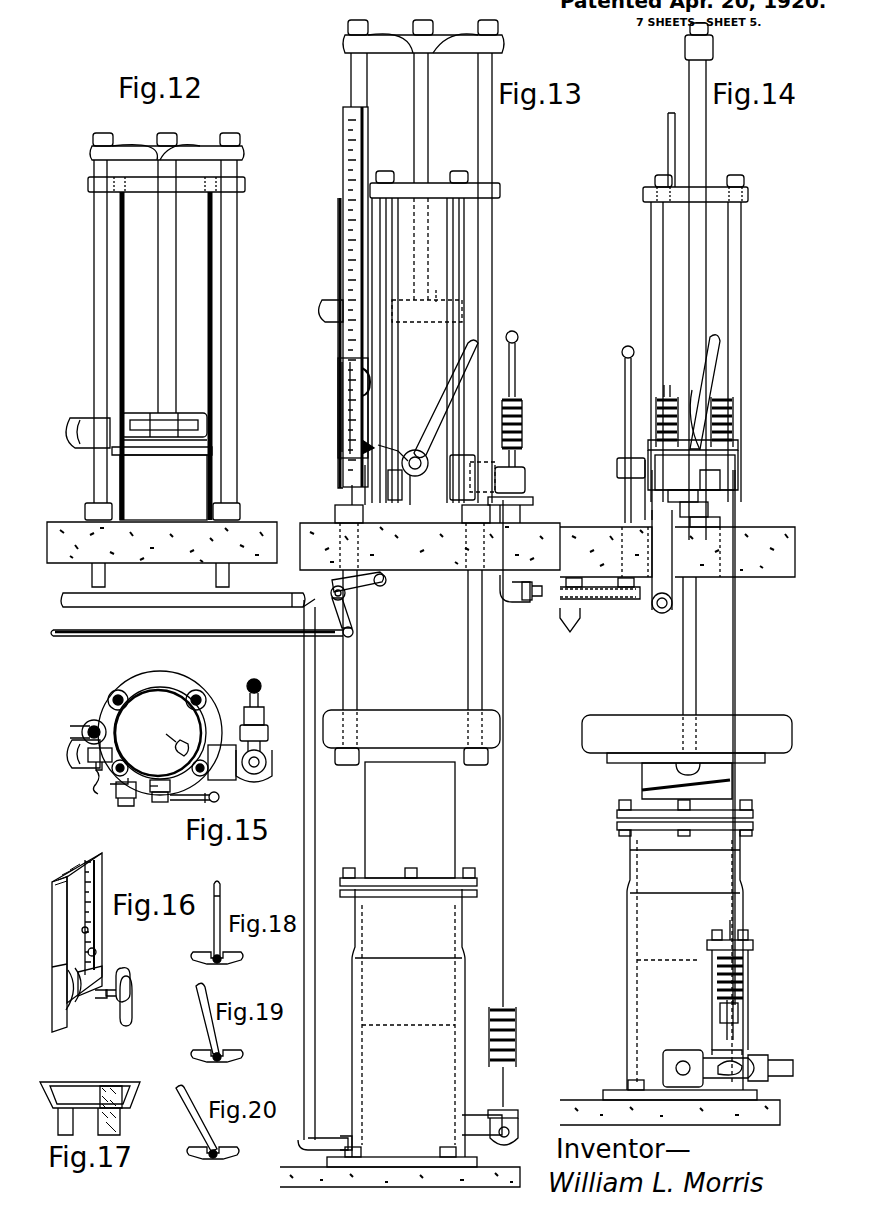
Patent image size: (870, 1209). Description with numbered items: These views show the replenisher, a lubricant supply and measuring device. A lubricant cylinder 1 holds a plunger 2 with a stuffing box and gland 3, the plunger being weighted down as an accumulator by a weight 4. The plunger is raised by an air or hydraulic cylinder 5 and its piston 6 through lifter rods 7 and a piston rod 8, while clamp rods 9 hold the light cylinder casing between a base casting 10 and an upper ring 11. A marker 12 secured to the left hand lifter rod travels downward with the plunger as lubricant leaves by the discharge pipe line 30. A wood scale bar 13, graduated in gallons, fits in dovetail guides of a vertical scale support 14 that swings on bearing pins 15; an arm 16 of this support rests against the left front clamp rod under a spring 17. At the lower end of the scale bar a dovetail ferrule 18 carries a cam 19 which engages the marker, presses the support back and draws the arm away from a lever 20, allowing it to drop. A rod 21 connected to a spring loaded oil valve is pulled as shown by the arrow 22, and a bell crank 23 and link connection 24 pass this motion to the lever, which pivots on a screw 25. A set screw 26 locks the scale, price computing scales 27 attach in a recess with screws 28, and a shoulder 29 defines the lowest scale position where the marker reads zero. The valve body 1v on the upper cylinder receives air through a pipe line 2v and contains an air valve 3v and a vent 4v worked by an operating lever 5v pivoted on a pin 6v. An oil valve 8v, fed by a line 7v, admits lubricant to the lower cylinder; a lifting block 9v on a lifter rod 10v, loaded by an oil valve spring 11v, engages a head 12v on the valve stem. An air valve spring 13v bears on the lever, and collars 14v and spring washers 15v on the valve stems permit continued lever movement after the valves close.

In FIG. 14, the lubricant cylinder 1 is at (628, 932).
In FIG. 14, the valve body 1v is at (716, 496).
In FIG. 15, the valve body 1v is at (224, 778).
In FIG. 13, the plunger 2 is at (410, 820).
In FIG. 14, the plunger 2 is at (642, 776).
In FIG. 13, the pipe line 2v is at (530, 612).
In FIG. 14, the pipe line 2v is at (660, 614).
In FIG. 13, the stuffing box and gland 3 is at (477, 886).
In FIG. 14, the stuffing box and gland 3 is at (617, 818).
In FIG. 14, the air valve 3v is at (674, 550).
In FIG. 13, the weight 4 is at (434, 732).
In FIG. 14, the weight 4 is at (650, 736).
In FIG. 14, the vent 4v is at (734, 476).
In FIG. 12, the air or hydraulic cylinder 5 is at (124, 360).
In FIG. 13, the air or hydraulic cylinder 5 is at (445, 236).
In FIG. 14, the air or hydraulic cylinder 5 is at (718, 252).
In FIG. 14, the operating lever 5v is at (714, 338).
In FIG. 12, the piston 6 is at (180, 413).
In FIG. 13, the piston 6 is at (434, 296).
In FIG. 14, the pin 6v is at (702, 414).
In FIG. 13, the lifter rods 7 is at (367, 86).
In FIG. 14, the lifter rods 7 is at (688, 78).
In FIG. 14, the line 7v is at (780, 1055).
In FIG. 12, the piston rod 8 is at (164, 254).
In FIG. 13, the piston rod 8 is at (428, 126).
In FIG. 14, the oil valve 8v is at (734, 1074).
In FIG. 12, the clamp rods 9 is at (218, 270).
In FIG. 13, the clamp rods 9 is at (390, 350).
In FIG. 14, the clamp rods 9 is at (660, 268).
In FIG. 15, the clamp rods 9 is at (161, 749).
In FIG. 14, the oil valve lifting block 9v is at (736, 1002).
In FIG. 12, the base casting 10 is at (120, 486).
In FIG. 14, the lifter rod 10v is at (735, 672).
In FIG. 12, the upper ring 11 is at (88, 182).
In FIG. 14, the upper ring 11 is at (643, 194).
In FIG. 14, the oil valve spring 11v is at (742, 962).
In FIG. 12, the marker 12 is at (80, 416).
In FIG. 13, the marker 12 is at (322, 304).
In FIG. 15, the marker 12 is at (72, 760).
In FIG. 14, the head 12v is at (720, 1022).
In FIG. 13, the scale bar 13 is at (343, 136).
In FIG. 16, the scale bar 13 is at (58, 921).
In FIG. 14, the air valve spring 13v is at (676, 386).
In FIG. 13, the scale support 14 is at (338, 236).
In FIG. 15, the scale support 14 is at (70, 734).
In FIG. 14, the collars 14v is at (652, 440).
In FIG. 13, the bearing pins 15 is at (372, 178).
In FIG. 15, the bearing pins 15 is at (118, 749).
In FIG. 14, the spring washers 15v is at (650, 410).
In FIG. 13, the arm 16 is at (364, 444).
In FIG. 15, the arm 16 is at (114, 786).
In FIG. 15, the spring 17 is at (104, 714).
In FIG. 17, the ferrule 18 is at (66, 1082).
In FIG. 13, the cam 19 is at (338, 368).
In FIG. 15, the cam 19 is at (88, 766).
In FIG. 17, the cam 19 is at (76, 1122).
In FIG. 13, the lever 20 is at (390, 446).
In FIG. 14, the lever 20 is at (624, 438).
In FIG. 15, the lever 20 is at (118, 798).
In FIG. 13, the rod 21 is at (251, 636).
In FIG. 13, the arrow 22 is at (146, 623).
In FIG. 13, the bell crank 23 is at (370, 593).
In FIG. 14, the bell crank 23 is at (600, 608).
In FIG. 13, the link connection 24 is at (392, 503).
In FIG. 14, the link connection 24 is at (624, 500).
In FIG. 13, the screw 25 is at (386, 474).
In FIG. 14, the screw 25 is at (617, 466).
In FIG. 15, the screw 25 is at (164, 800).
In FIG. 13, the set screw 26 is at (373, 377).
In FIG. 15, the set screw 26 is at (96, 784).
In FIG. 16, the set screw 26 is at (124, 1018).
In FIG. 13, the price computing scales 27 is at (386, 308).
In FIG. 16, the price computing scales 27 is at (96, 884).
In FIG. 16, the screws 28 is at (98, 944).
In FIG. 13, the shoulder 29 is at (340, 442).
In FIG. 13, the discharge pipe line 30 is at (128, 594).